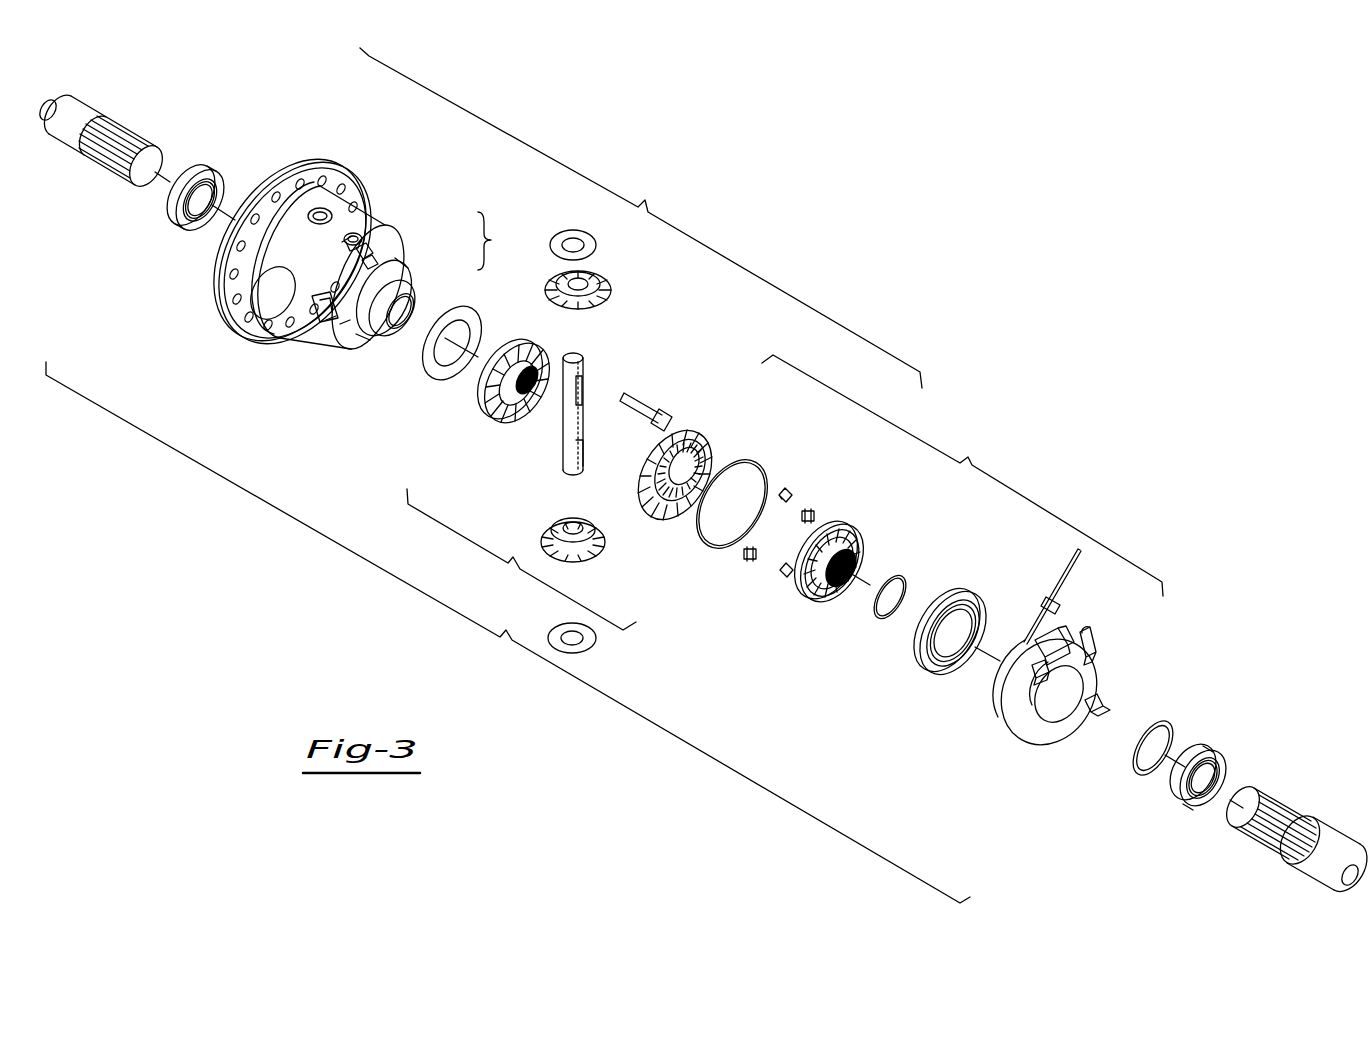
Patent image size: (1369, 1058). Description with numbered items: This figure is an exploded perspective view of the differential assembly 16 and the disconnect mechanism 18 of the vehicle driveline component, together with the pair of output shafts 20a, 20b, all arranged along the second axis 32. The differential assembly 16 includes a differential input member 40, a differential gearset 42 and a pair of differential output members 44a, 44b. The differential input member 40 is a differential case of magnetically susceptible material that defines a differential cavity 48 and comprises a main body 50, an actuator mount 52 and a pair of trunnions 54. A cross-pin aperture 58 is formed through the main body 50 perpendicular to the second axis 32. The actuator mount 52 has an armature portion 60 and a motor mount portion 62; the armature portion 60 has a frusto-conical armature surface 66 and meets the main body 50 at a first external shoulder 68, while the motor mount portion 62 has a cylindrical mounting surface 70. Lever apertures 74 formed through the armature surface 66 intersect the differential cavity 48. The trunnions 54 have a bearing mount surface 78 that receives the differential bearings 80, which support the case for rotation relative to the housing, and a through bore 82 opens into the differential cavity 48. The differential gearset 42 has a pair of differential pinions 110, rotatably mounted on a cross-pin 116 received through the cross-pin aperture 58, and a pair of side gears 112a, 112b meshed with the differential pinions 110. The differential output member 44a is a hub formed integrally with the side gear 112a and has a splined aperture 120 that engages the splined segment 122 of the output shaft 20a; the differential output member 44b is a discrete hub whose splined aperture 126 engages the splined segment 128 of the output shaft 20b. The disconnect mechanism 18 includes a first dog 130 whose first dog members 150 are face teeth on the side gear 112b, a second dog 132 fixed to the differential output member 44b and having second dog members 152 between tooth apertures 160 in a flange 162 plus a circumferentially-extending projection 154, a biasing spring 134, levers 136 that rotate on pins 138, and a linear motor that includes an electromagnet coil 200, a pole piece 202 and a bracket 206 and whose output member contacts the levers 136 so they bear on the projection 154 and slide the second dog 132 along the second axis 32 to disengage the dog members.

The differential assembly 16 is at (641, 218).
The disconnect mechanism 18 is at (962, 475).
The output shaft 20a is at (102, 116).
The output shaft 20b is at (1293, 809).
The second axis 32 is at (1095, 740).
The differential input member 40 is at (328, 287).
The differential gearset 42 is at (521, 559).
The differential output member 44a is at (500, 408).
The differential output member 44b is at (842, 595).
The differential cavity 48 is at (262, 288).
The main body 50 is at (360, 238).
The actuator mount 52 is at (437, 242).
The trunnions 54 is at (390, 355).
The cross-pin aperture 58 is at (322, 214).
The armature portion 60 is at (375, 245).
The motor mount portion 62 is at (380, 272).
The armature surface 66 is at (328, 322).
The first external shoulder 68 is at (325, 330).
The mounting surface 70 is at (342, 326).
The lever apertures 74 is at (348, 243).
The bearing mount surface 78 is at (372, 322).
The differential bearings 80 is at (175, 205).
The through bore 82 is at (420, 318).
The differential pinions 110 is at (598, 294).
The side gear 112a is at (508, 422).
The side gear 112b is at (672, 436).
The cross-pin 116 is at (576, 420).
The splined aperture 120 is at (535, 400).
The splined segment 122 is at (128, 138).
The splined aperture 126 is at (852, 588).
The splined segment 128 is at (1280, 800).
The first dog 130 is at (700, 448).
The second dog 132 is at (827, 584).
The biasing spring 134 is at (912, 592).
The levers 136 is at (785, 492).
The pins 138 is at (745, 553).
The first dog members 150 is at (665, 512).
The second dog members 152 is at (840, 525).
The circumferentially-extending projection 154 is at (868, 535).
The tooth apertures 160 is at (825, 600).
The flange 162 is at (798, 588).
The electromagnet coil 200 is at (920, 652).
The pole piece 202 is at (1043, 662).
The bracket 206 is at (1090, 632).